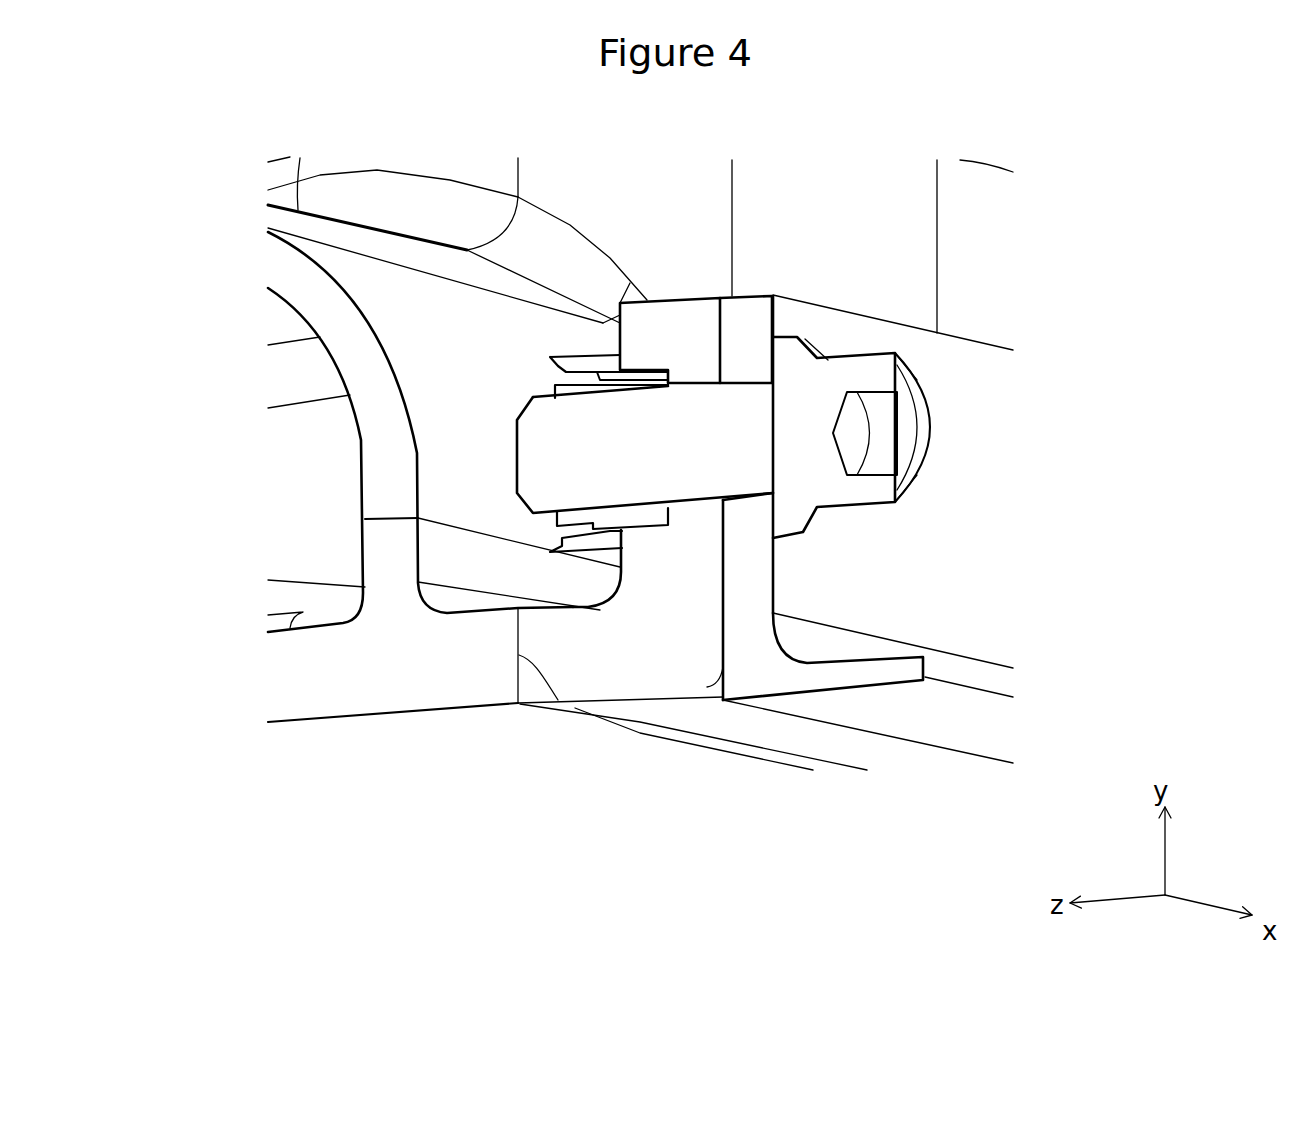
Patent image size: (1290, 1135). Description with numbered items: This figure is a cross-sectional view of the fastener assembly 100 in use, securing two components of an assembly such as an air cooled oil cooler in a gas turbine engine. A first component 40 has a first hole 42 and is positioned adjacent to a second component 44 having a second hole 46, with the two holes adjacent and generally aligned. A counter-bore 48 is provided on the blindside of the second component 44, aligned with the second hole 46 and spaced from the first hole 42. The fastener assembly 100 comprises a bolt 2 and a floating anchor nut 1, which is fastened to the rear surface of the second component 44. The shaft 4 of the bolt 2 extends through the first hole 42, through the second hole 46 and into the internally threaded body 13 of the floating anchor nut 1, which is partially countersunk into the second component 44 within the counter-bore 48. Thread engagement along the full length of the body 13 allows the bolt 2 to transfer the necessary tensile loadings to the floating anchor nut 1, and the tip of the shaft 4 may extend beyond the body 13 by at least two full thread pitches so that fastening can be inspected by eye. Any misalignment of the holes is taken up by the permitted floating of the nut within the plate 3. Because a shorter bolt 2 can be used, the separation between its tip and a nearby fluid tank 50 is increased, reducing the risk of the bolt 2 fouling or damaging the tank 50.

The fastener assembly 100 is at (403, 148).
The fluid tank 50 is at (298, 288).
The bolt 2 is at (788, 335).
The plate 3 is at (577, 345).
The floating anchor nut 1 is at (540, 365).
The shaft 4 is at (545, 393).
The second component 44 is at (668, 325).
The first component 40 is at (743, 313).
The second hole 46 is at (690, 500).
The counter-bore 48 is at (640, 525).
The internally threaded body 13 is at (617, 527).
The first hole 42 is at (731, 496).